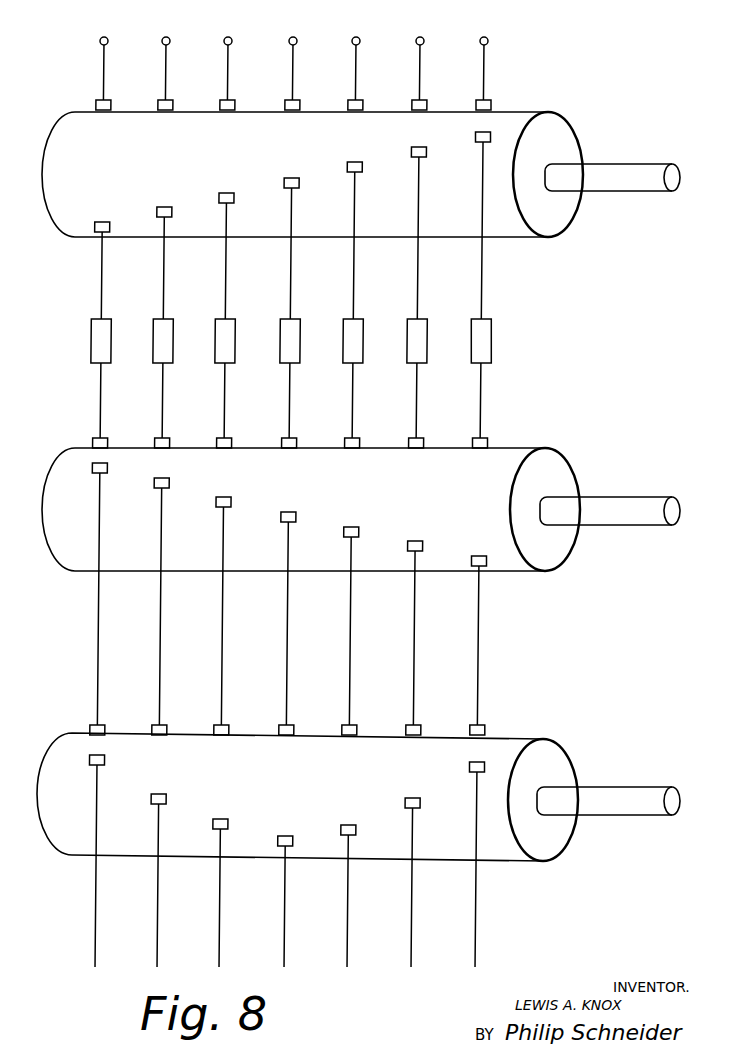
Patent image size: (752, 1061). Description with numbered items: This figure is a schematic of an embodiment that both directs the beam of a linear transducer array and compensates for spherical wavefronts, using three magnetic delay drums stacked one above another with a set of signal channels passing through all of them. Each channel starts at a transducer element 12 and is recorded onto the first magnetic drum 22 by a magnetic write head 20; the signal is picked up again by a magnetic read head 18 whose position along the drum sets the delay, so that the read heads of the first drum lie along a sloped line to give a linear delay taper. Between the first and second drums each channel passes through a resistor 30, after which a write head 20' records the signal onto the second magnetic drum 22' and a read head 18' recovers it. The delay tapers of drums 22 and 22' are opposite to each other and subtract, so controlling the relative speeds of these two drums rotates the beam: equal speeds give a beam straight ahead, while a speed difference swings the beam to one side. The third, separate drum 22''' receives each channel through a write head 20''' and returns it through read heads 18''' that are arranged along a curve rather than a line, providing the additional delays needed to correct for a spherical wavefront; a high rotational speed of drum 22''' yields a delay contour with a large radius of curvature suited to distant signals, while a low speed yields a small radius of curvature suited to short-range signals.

The transducer element 12 is at (486, 37).
The magnetic write head 20 is at (504, 86).
The magnetic read head 18 is at (513, 112).
The magnetic drum 22 is at (361, 163).
The resistor 30 is at (492, 341).
The magnetic write head of second drum 20' is at (508, 425).
The second magnetic drum 22' is at (361, 488).
The magnetic read head of second drum 18' is at (505, 585).
The magnetic write head of spherical-correction drum 20''' is at (504, 716).
The spherical-correction magnetic drum 22''' is at (358, 779).
The read head of spherical-correction drum 18''' is at (548, 760).